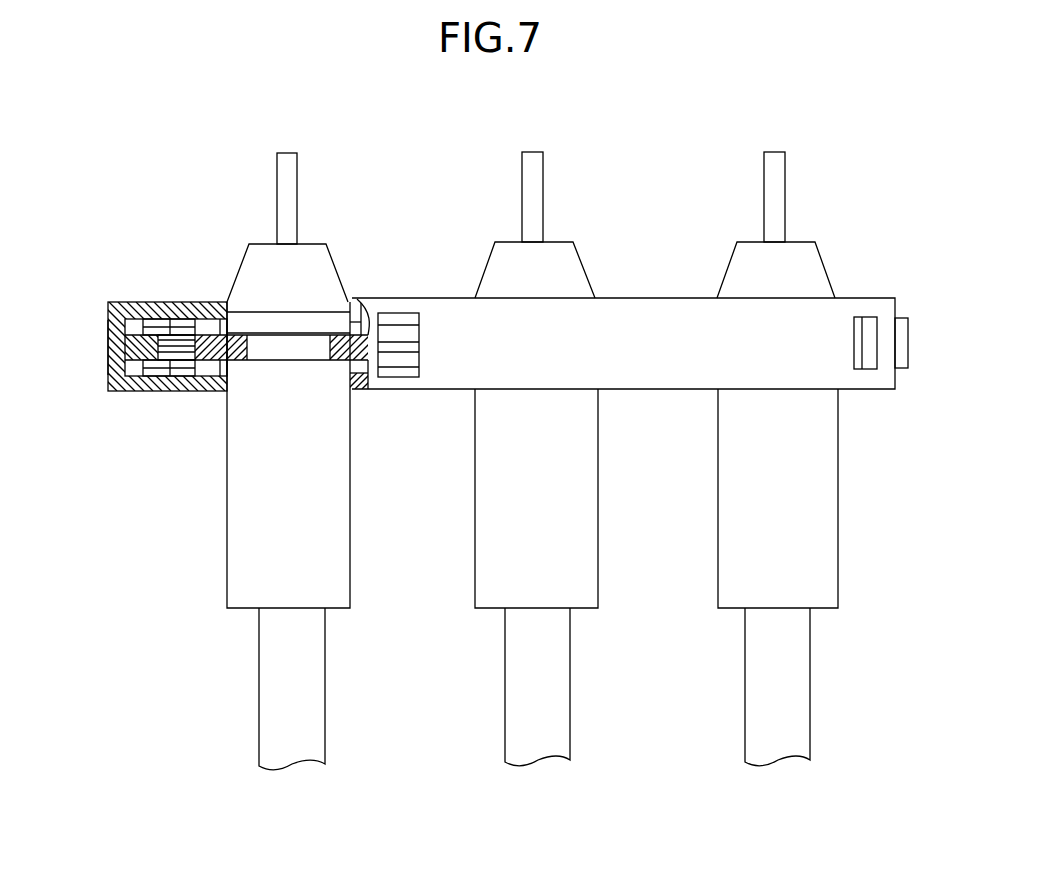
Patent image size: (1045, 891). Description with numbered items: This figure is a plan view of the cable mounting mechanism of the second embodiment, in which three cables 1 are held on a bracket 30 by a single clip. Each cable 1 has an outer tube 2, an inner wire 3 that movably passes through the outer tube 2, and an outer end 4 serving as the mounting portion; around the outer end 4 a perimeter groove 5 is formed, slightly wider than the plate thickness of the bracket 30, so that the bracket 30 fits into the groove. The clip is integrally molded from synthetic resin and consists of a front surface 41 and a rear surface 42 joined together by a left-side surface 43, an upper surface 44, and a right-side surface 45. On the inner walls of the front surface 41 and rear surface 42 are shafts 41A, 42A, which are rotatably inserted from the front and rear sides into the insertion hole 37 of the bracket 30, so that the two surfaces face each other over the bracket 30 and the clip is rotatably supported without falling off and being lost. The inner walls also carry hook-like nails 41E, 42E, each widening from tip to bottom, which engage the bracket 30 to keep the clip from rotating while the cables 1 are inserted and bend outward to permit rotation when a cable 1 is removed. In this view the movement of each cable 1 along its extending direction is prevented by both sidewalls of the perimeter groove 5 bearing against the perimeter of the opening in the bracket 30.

The cable 1 is at (372, 587).
The outer tube 2 is at (325, 700).
The inner wire 3 is at (297, 172).
The outer end 4 is at (351, 513).
The perimeter groove 5 is at (367, 303).
The bracket 30 is at (220, 318).
The insertion hole 37 is at (168, 352).
The front surface 41 is at (193, 378).
The shaft 41A is at (167, 355).
The hook-like nail 41E is at (398, 358).
The rear surface 42 is at (122, 302).
The shaft 42A is at (181, 331).
The hook-like nail 42E is at (398, 322).
The left-side surface 43 is at (110, 343).
The upper surface 44 is at (640, 306).
The right-side surface 45 is at (882, 333).